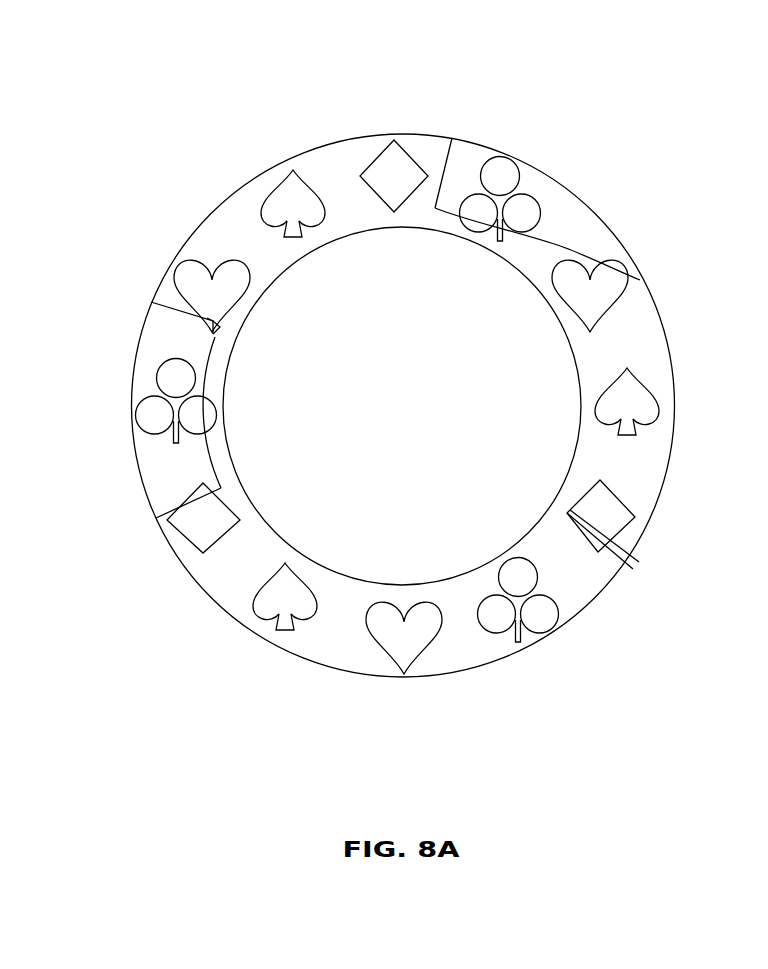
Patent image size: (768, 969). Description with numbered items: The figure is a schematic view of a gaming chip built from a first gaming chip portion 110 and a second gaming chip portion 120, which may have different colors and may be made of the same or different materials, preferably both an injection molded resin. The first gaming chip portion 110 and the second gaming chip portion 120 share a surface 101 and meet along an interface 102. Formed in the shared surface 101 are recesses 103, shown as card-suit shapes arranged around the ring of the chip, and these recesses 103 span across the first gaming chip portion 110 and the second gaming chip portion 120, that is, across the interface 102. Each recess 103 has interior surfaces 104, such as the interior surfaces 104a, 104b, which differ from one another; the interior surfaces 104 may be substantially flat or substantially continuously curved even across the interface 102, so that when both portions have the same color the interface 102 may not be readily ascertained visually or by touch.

The surface 101 is at (441, 405).
The interface 102 is at (450, 681).
The recess 103 is at (423, 359).
The interior surface 104 is at (408, 437).
The interior surface 104a is at (643, 246).
The interior surface 104b is at (135, 376).
The first gaming chip portion 110 is at (368, 381).
The second gaming chip portion 120 is at (491, 325).